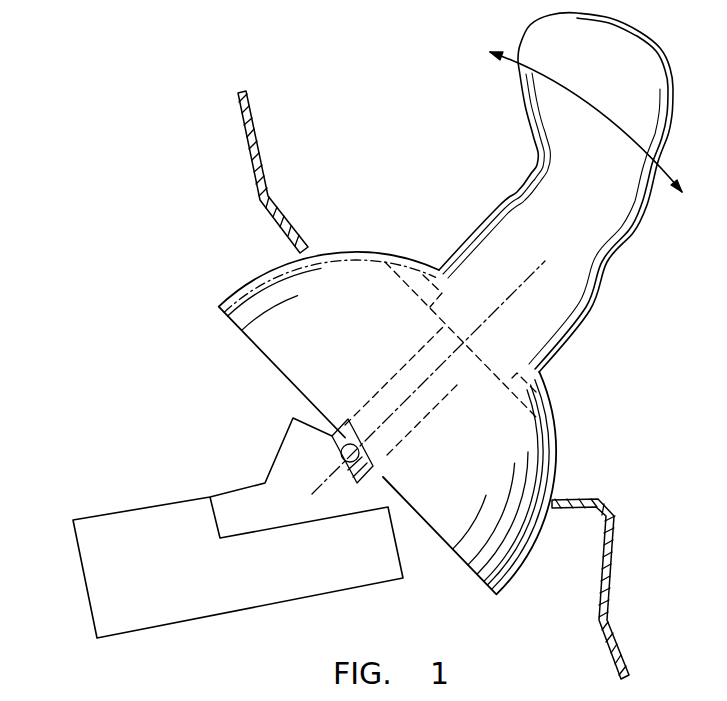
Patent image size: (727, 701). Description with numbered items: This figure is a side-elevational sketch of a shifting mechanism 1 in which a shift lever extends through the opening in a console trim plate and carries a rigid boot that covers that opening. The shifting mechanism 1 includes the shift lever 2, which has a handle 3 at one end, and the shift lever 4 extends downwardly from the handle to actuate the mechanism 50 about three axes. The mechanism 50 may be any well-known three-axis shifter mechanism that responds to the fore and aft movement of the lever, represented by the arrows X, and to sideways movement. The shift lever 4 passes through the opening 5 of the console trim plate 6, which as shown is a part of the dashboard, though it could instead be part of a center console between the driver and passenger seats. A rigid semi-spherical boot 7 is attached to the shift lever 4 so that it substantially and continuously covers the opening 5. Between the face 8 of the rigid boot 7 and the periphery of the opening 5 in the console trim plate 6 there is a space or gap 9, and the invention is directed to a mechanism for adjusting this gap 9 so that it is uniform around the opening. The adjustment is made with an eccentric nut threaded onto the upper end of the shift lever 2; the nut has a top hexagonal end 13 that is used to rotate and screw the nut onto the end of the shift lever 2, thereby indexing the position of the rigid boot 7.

The shifting mechanism 1 is at (403, 243).
The shift lever 2 is at (597, 323).
The handle 3 is at (607, 234).
The shift lever 4 is at (333, 450).
The opening 5 is at (311, 254).
The console trim plate 6 is at (263, 168).
The rigid semi-spherical boot 7 is at (373, 290).
The face 8 is at (313, 258).
The gap 9 is at (297, 254).
The top hexagonal end 13 is at (526, 281).
The mechanism 50 is at (250, 503).
The arrows X is at (603, 115).